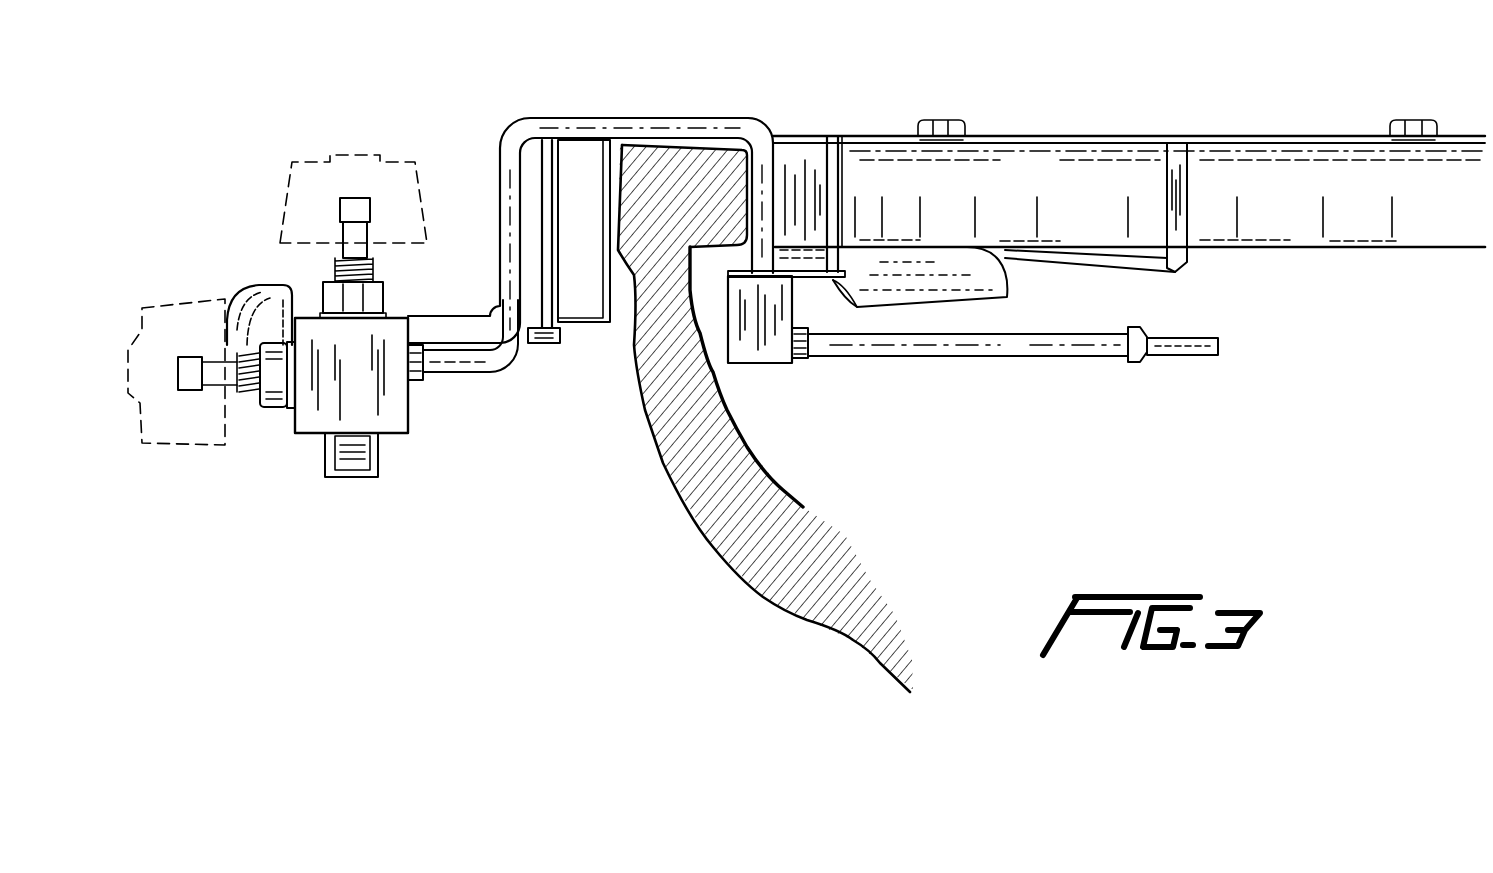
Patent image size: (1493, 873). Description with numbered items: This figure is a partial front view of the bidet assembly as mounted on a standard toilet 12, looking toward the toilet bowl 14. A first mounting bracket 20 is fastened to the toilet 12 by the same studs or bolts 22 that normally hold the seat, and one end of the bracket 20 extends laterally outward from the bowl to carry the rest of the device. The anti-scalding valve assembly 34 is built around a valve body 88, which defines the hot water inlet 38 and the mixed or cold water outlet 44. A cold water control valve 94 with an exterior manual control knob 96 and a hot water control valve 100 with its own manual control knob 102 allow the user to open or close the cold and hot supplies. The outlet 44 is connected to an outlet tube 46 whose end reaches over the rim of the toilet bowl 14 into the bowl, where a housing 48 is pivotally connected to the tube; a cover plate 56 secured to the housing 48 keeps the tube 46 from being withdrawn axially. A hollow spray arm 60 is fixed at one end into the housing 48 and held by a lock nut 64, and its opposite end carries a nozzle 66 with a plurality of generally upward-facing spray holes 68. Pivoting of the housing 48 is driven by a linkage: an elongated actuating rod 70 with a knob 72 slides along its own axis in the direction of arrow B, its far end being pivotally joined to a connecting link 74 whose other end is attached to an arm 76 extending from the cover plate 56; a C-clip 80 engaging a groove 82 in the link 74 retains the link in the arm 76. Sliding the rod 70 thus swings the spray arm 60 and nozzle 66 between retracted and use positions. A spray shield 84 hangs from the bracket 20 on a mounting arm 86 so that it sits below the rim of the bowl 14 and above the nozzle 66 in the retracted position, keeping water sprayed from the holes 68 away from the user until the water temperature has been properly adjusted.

The toilet 12 is at (737, 573).
The toilet bowl 14 is at (790, 492).
The first mounting bracket 20 is at (1102, 135).
The studs or bolts 22 is at (963, 120).
The anti-scalding valve assembly 34 is at (295, 462).
The hot water inlet 38 is at (357, 462).
The fluid outlet 44 is at (410, 393).
The outlet tube 46 is at (612, 119).
The housing 48 is at (770, 360).
The cover plate 56 is at (733, 273).
The spray arm 60 is at (1108, 350).
The lock nut 64 is at (812, 352).
The nozzle 66 is at (1210, 355).
The spray holes 68 is at (1197, 337).
The elongated rod 70 is at (530, 345).
The knob 72 is at (247, 293).
The connecting link 74 is at (545, 178).
The arm 76 is at (800, 267).
The C-clip 80 is at (810, 348).
The groove 82 is at (810, 348).
The spray shield 84 is at (973, 267).
The mounting arm 86 is at (1178, 150).
The valve body 88 is at (388, 415).
The cold water control valve 94 is at (385, 292).
The manual control knob 96 is at (312, 175).
The hot water control valve 100 is at (272, 405).
The manual control knob 102 is at (158, 318).